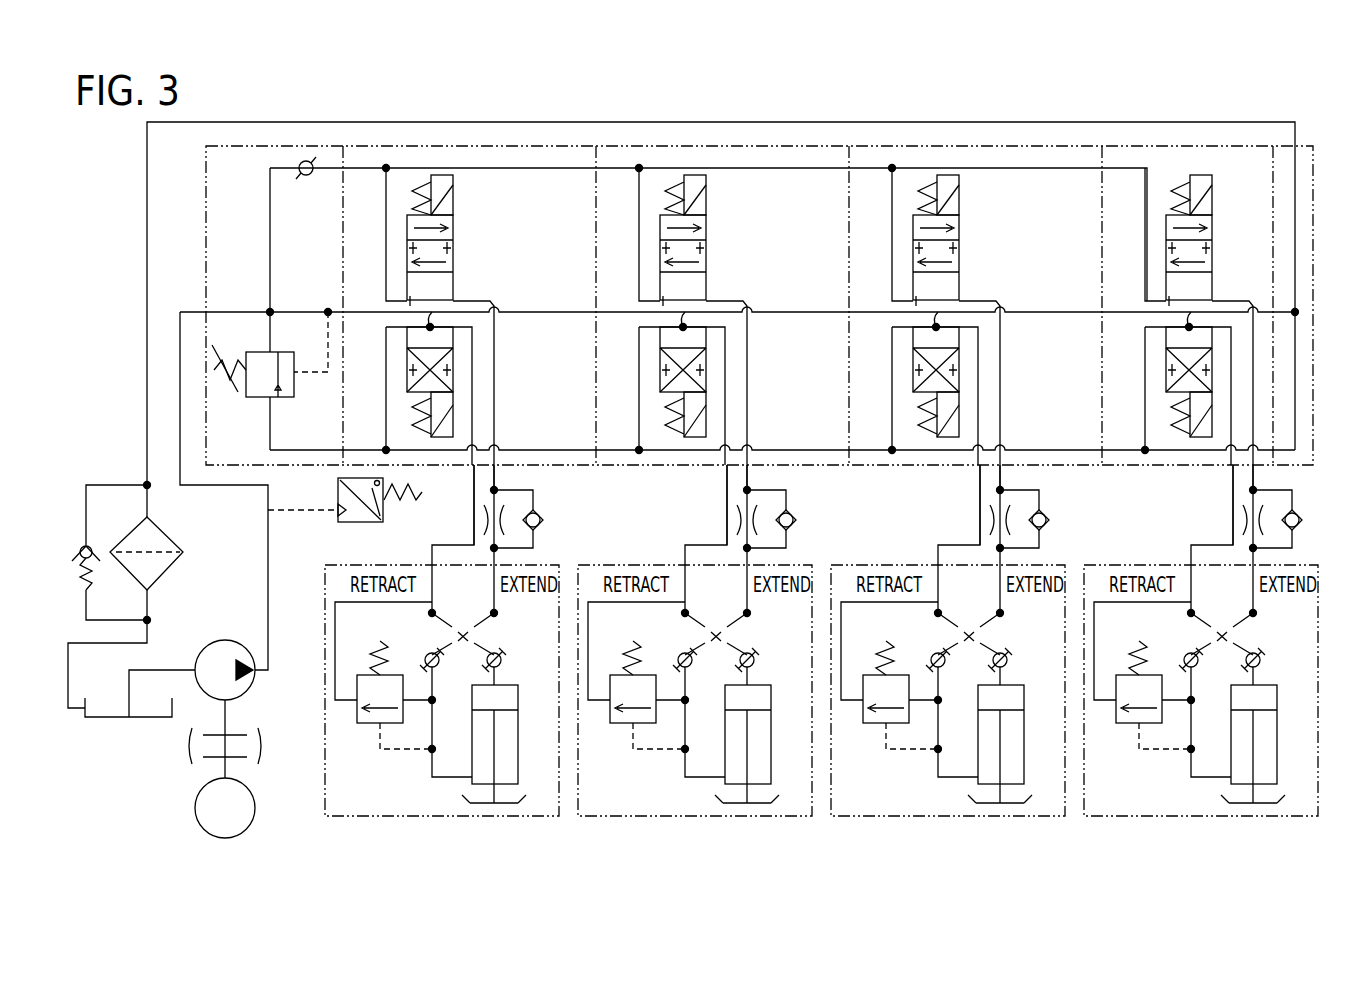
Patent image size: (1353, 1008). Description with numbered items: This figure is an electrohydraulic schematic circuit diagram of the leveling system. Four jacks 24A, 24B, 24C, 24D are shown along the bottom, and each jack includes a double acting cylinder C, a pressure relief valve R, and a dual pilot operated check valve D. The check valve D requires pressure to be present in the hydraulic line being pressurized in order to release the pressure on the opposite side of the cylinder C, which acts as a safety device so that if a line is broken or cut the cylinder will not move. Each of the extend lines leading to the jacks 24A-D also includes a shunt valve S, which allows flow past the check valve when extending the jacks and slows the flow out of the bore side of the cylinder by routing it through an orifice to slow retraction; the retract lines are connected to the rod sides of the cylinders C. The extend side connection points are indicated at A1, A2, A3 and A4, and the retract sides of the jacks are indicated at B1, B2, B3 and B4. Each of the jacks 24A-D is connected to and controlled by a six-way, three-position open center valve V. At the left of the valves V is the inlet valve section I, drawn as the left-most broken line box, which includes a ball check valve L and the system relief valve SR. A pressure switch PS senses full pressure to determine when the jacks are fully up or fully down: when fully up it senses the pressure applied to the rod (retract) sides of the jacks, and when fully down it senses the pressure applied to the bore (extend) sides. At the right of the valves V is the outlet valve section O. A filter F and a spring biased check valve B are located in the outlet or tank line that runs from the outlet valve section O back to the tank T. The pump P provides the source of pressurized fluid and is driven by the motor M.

The outlet valve section O is at (1315, 178).
The inlet valve section I is at (206, 215).
The ball check valve L is at (306, 178).
The system relief valve SR is at (262, 352).
The pressure switch PS is at (409, 522).
The spring biased check valve B is at (92, 548).
The filter F is at (160, 530).
The tank T is at (100, 720).
The pump P is at (226, 641).
The motor M is at (225, 769).
The six-way, three-position open center valve V is at (479, 255).
The shunt valve S is at (552, 512).
The extend side connection point A1 is at (498, 486).
The extend side connection point A2 is at (751, 486).
The extend side connection point A3 is at (1004, 486).
The extend side connection point A4 is at (1257, 486).
The retract side B1 is at (474, 528).
The retract side B2 is at (727, 492).
The retract side B3 is at (980, 492).
The retract side B4 is at (1233, 492).
The jack 24A is at (450, 831).
The jack 24B is at (703, 831).
The jack 24C is at (956, 831).
The jack 24D is at (1209, 831).
The dual pilot operated check valve D is at (478, 618).
The pressure relief valve R is at (370, 725).
The double acting cylinder C is at (520, 727).